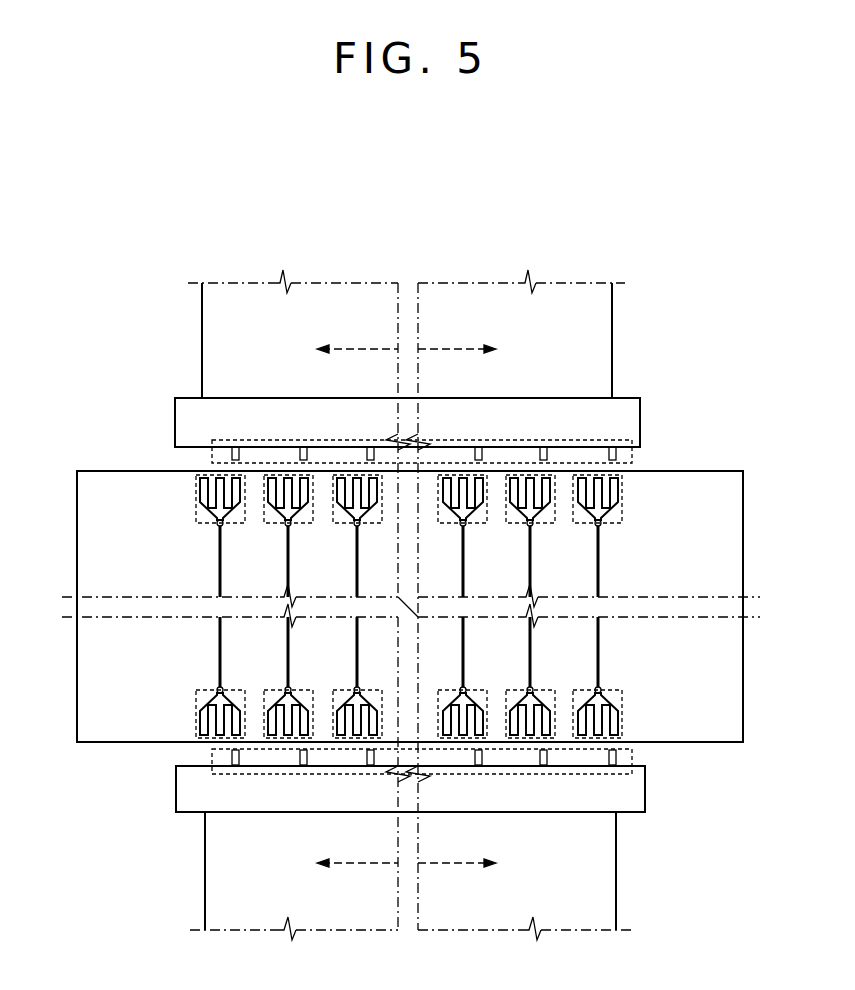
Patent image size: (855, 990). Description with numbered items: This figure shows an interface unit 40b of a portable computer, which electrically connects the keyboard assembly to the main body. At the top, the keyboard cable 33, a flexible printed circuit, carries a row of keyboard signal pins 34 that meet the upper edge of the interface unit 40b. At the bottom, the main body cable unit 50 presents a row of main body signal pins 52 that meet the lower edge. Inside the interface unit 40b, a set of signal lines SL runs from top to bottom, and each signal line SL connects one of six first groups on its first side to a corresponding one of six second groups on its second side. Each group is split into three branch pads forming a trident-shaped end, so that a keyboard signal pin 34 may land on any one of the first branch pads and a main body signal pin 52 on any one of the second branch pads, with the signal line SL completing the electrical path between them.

The keyboard cable 33 is at (202, 343).
The keyboard signal pins 34 is at (212, 458).
The main body signal pins 52 is at (212, 758).
The interface unit 40b is at (77, 680).
The main body cable unit 50 is at (712, 883).
The signal lines SL is at (600, 660).